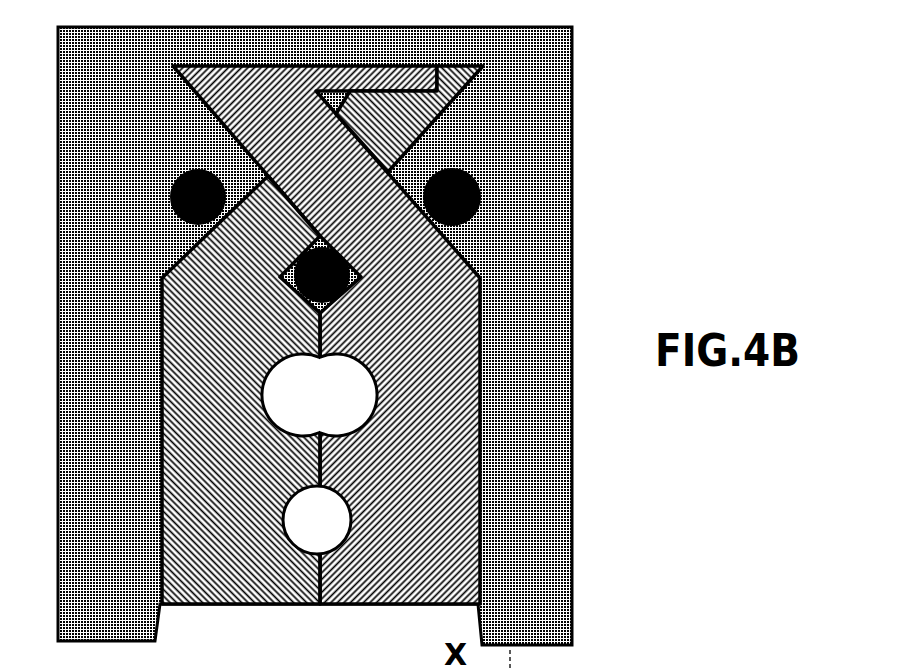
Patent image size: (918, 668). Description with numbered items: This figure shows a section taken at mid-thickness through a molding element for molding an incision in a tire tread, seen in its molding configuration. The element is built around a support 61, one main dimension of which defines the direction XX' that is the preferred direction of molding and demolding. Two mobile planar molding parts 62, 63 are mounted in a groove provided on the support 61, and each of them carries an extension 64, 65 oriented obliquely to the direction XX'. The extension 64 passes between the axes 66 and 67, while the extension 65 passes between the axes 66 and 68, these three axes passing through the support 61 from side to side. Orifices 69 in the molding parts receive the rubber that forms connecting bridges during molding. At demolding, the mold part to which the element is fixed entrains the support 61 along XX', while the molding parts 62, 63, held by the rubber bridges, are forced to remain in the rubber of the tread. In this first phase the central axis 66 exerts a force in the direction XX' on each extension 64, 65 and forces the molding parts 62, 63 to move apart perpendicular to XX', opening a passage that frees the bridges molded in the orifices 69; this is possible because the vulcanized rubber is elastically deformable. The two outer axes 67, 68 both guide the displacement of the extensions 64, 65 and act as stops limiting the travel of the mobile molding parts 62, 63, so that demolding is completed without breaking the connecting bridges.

The support 61 is at (482, 192).
The mobile molding part 62 is at (440, 555).
The mobile molding part 63 is at (253, 537).
The extension 64 is at (385, 233).
The extension 65 is at (412, 120).
The axis 66 is at (373, 280).
The axis 67 is at (500, 221).
The axis 68 is at (180, 215).
The orifice 69 is at (318, 528).